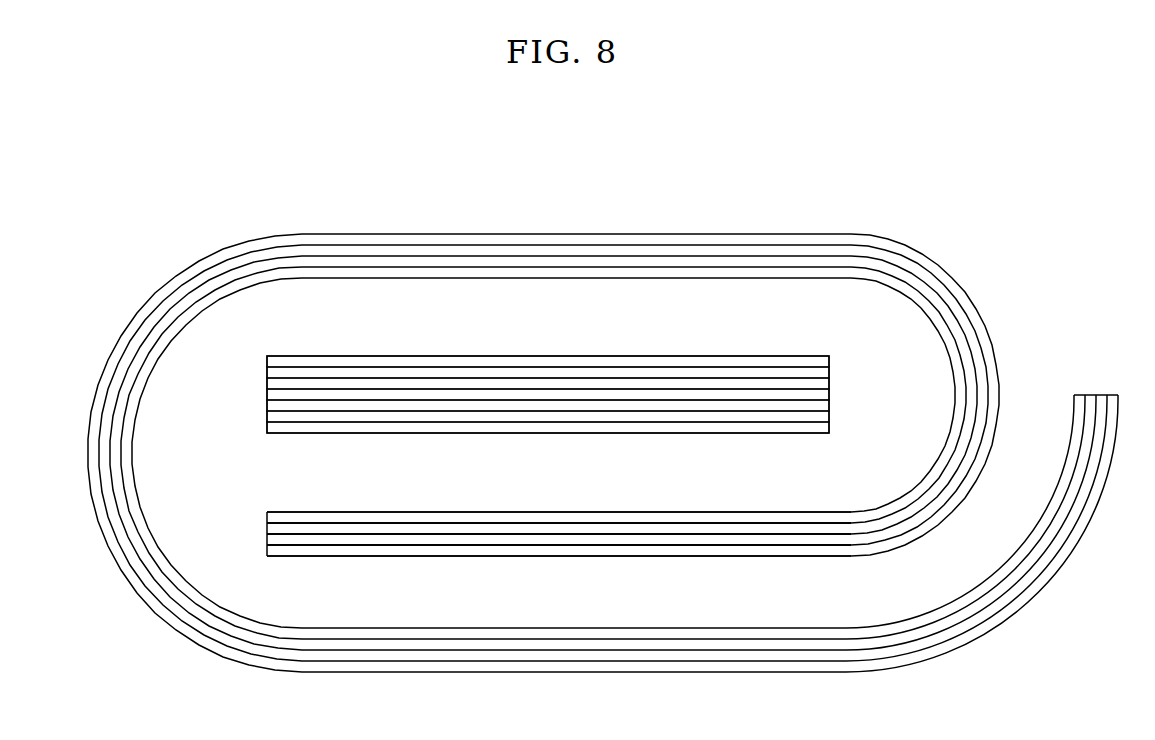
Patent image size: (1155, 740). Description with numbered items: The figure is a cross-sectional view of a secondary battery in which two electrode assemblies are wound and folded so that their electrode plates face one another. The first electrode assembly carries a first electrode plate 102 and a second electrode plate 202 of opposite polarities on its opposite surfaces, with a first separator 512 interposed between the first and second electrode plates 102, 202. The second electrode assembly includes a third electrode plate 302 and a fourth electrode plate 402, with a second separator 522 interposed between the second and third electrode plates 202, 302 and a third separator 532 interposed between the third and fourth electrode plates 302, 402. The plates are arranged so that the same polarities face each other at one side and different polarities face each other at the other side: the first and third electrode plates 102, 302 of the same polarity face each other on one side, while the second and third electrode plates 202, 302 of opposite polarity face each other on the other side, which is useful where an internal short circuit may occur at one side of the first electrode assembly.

The second electrode plate 202 is at (270, 361).
The first separator 512 is at (270, 372).
The first electrode plate 102 is at (270, 383).
The second separator 522 is at (308, 519).
The third electrode plate 302 is at (381, 530).
The third separator 532 is at (330, 540).
The fourth electrode plate 402 is at (385, 551).